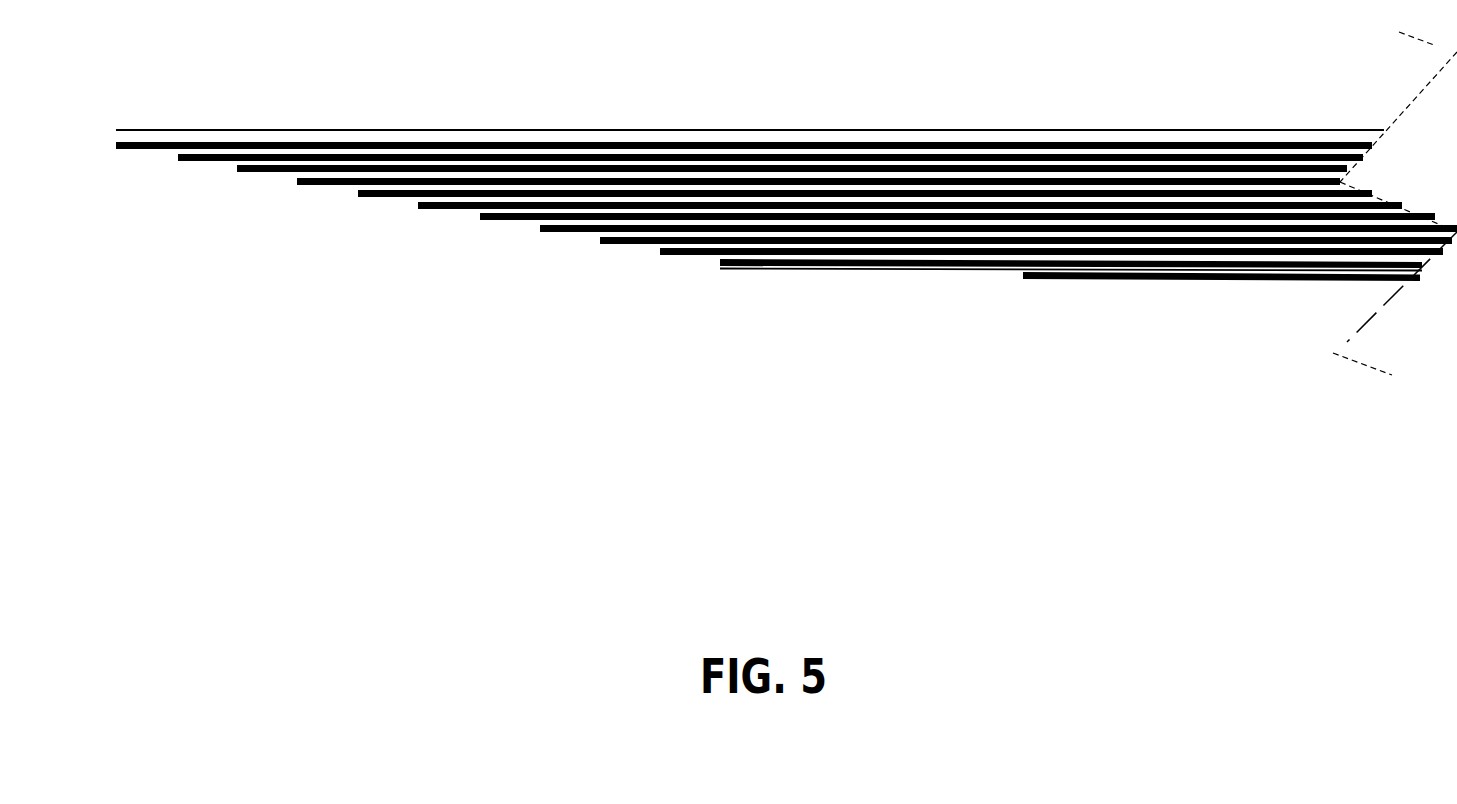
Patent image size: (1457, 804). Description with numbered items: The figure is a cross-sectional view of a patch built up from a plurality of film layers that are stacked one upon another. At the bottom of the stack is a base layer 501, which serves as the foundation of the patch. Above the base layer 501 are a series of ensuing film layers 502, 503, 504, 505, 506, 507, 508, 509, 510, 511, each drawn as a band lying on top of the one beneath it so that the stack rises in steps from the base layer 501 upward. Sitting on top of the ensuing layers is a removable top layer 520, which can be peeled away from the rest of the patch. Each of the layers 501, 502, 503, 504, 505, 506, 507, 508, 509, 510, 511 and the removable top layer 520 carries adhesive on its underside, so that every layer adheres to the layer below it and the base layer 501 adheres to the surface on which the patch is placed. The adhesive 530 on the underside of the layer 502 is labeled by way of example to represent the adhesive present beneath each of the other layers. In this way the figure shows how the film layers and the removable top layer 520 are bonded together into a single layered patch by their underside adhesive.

The base layer 501 is at (1024, 273).
The layer 502 is at (721, 260).
The layer 503 is at (661, 249).
The layer 504 is at (601, 238).
The layer 505 is at (541, 226).
The layer 506 is at (481, 214).
The layer 507 is at (419, 203).
The layer 508 is at (359, 191).
The layer 509 is at (298, 179).
The layer 510 is at (238, 166).
The layer 511 is at (179, 155).
The removable top layer 520 is at (117, 131).
The adhesive 530 is at (823, 270).